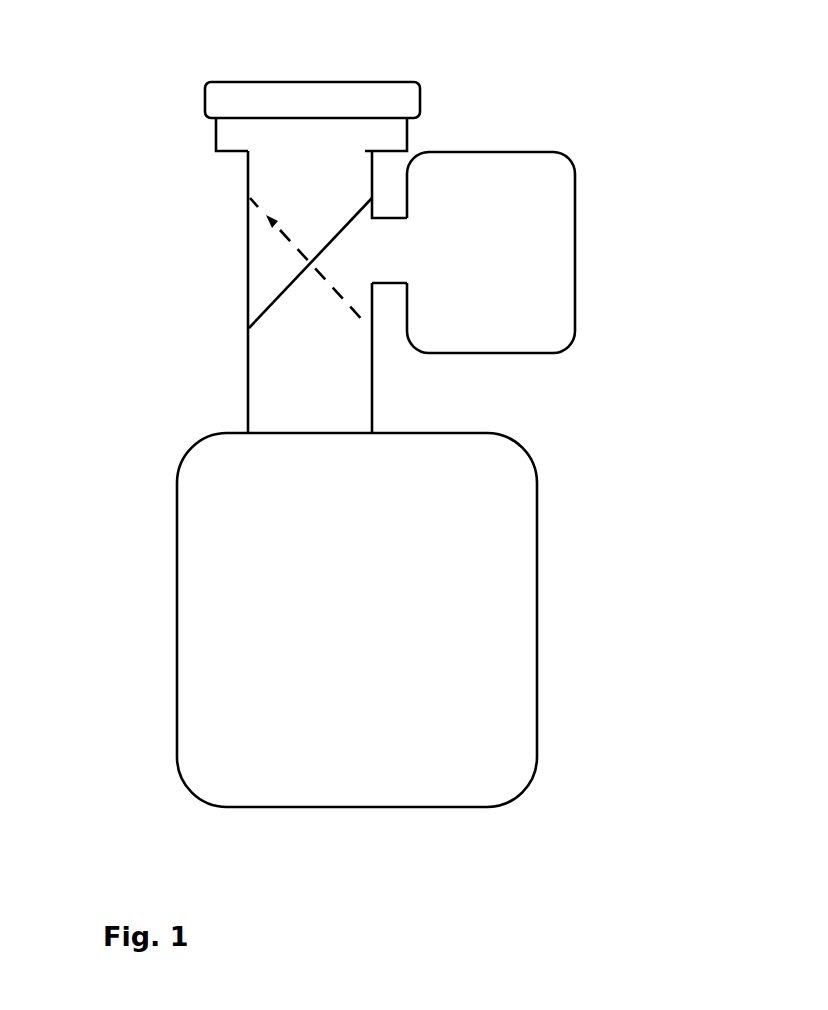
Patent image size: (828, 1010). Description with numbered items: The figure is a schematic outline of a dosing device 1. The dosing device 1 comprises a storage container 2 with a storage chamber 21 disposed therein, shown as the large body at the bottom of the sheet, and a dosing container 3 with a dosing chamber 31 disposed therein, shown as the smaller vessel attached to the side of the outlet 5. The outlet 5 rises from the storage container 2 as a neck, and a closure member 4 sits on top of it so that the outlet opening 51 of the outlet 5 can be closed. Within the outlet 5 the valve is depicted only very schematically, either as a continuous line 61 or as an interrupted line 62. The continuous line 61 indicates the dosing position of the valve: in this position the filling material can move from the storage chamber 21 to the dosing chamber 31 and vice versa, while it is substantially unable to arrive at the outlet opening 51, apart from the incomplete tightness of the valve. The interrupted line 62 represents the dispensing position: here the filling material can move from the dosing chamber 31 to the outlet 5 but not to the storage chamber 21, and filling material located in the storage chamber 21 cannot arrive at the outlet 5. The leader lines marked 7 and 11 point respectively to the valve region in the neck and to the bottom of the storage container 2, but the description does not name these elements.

The dosing device 1 is at (468, 94).
The storage container 2 is at (175, 715).
The dosing container 3 is at (542, 150).
The closure member 4 is at (312, 88).
The outlet 5 is at (272, 148).
The valve flap 7 is at (260, 275).
The bottom of container 11 is at (273, 808).
The storage chamber 21 is at (210, 648).
The dosing chamber 31 is at (542, 225).
The outlet opening 51 is at (258, 117).
The continuous line 61 is at (282, 297).
The interrupted line 62 is at (270, 219).